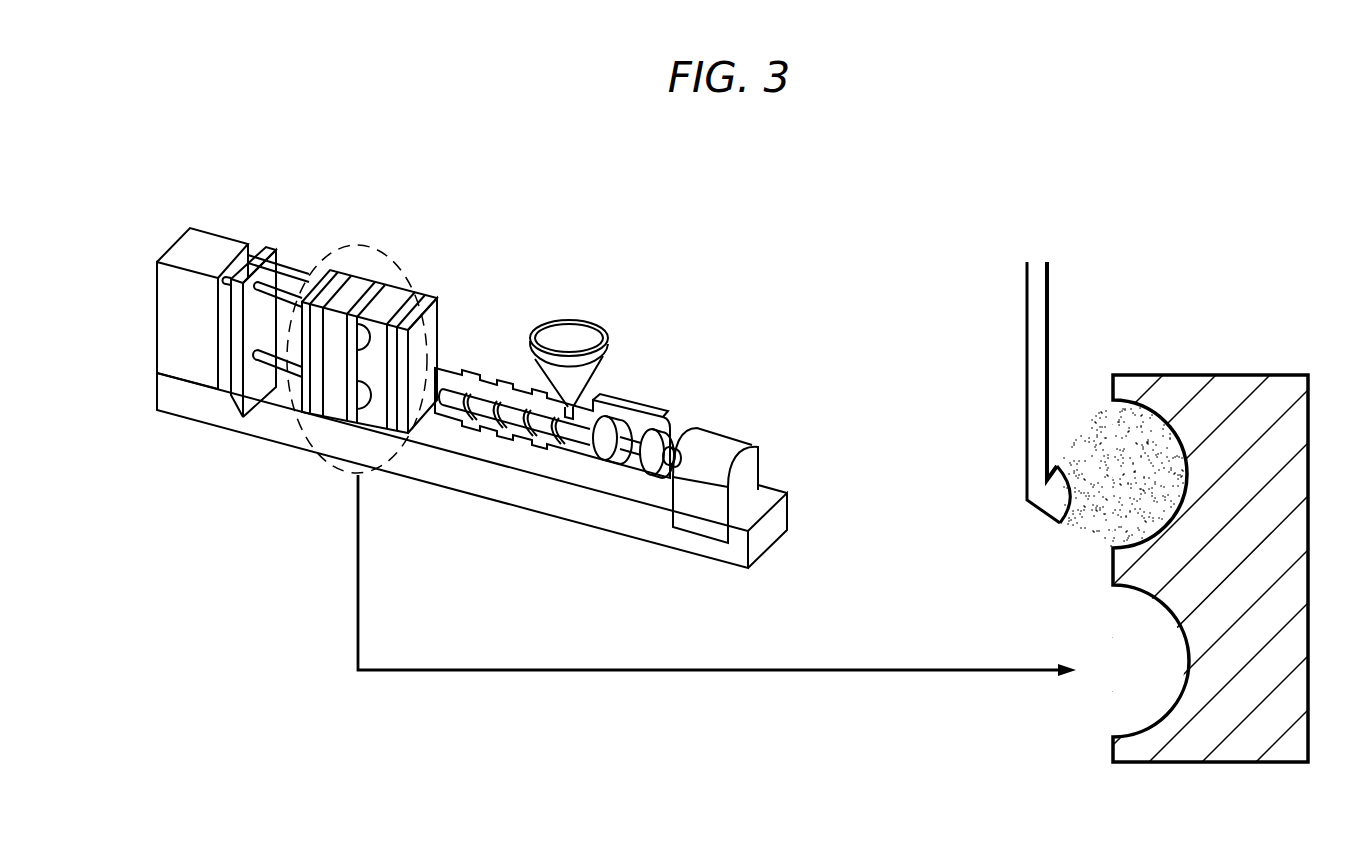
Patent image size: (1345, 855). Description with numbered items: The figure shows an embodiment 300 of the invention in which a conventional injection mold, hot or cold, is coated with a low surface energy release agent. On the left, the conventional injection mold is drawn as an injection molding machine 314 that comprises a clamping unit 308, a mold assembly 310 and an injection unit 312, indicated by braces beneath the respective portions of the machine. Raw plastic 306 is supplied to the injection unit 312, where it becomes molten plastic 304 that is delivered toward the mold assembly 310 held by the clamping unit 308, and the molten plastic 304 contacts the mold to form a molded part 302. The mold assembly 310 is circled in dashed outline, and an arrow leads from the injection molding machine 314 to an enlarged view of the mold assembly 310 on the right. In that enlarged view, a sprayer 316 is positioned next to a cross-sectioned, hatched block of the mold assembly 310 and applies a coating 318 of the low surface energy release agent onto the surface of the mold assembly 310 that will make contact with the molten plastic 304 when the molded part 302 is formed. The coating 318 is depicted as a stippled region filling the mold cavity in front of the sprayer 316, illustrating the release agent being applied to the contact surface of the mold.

The embodiment 300 is at (243, 167).
The molded part 302 is at (417, 294).
The molten plastic 304 is at (453, 368).
The raw plastic 306 is at (608, 343).
The clamping unit 308 is at (288, 457).
The mold assembly 310 is at (388, 486).
The injection unit 312 is at (740, 579).
The injection molding machine 314 is at (102, 470).
The sprayer 316 is at (1024, 378).
The coating 318 is at (1113, 428).